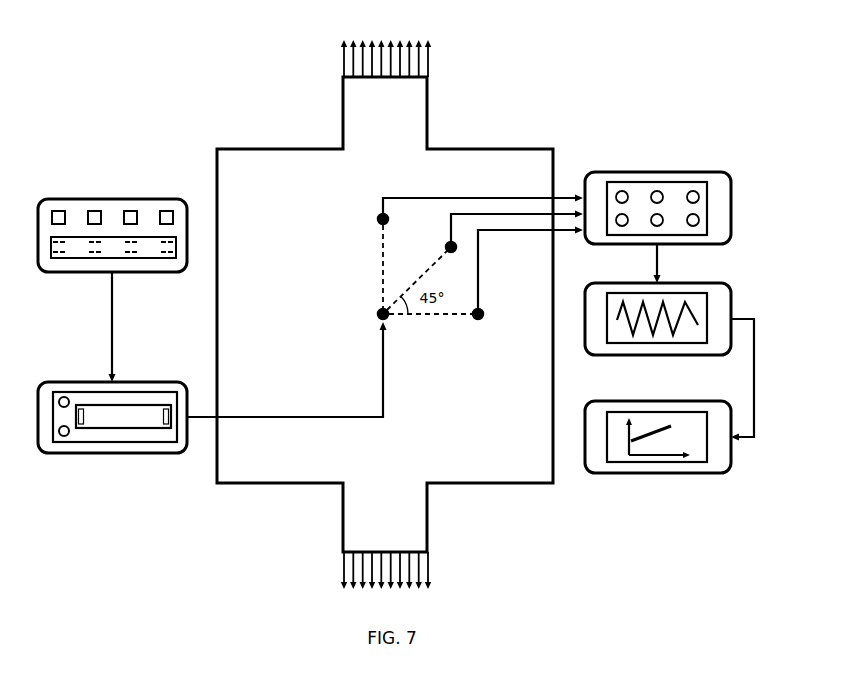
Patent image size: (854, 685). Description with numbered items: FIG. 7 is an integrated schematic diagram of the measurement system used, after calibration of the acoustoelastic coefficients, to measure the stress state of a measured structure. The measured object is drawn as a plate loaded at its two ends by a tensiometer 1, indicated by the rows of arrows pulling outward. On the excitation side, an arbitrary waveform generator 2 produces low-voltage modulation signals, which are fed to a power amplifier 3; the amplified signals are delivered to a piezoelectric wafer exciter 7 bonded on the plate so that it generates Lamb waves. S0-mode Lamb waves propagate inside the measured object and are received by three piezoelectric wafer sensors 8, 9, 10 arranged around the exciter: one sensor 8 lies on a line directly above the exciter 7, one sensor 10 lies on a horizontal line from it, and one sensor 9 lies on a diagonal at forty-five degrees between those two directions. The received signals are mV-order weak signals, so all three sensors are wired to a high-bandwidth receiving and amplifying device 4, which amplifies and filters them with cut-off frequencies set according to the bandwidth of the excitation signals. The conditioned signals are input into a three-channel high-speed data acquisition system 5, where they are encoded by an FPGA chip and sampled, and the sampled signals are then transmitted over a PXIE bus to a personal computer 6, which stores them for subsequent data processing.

The tensiometer 1 is at (386, 44).
The arbitrary waveform generator 2 is at (112, 223).
The power amplifier 3 is at (112, 431).
The high-bandwidth receiving and amplifying device 4 is at (658, 195).
The three-channel high-speed data acquisition system 5 is at (658, 330).
The personal computer 6 is at (658, 449).
The piezoelectric wafer exciter 7 is at (364, 314).
The piezoelectric wafer sensor 8 is at (465, 210).
The piezoelectric wafer sensor 9 is at (501, 232).
The piezoelectric wafer sensor 10 is at (528, 288).